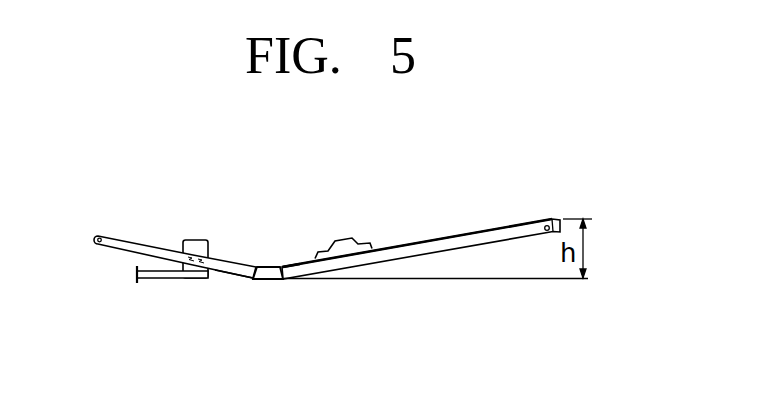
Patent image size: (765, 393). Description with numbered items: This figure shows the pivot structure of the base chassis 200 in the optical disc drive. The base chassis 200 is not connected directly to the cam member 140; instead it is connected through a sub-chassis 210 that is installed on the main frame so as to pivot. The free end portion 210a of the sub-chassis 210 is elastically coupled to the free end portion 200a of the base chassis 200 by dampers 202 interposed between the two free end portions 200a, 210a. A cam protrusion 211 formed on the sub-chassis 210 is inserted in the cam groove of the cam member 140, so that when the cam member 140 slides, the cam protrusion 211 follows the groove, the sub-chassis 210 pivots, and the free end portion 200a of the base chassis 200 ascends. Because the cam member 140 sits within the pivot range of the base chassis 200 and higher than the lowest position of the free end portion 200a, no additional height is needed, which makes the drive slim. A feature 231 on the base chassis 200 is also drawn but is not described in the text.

The cam member 140 is at (172, 280).
The base chassis 200 is at (459, 236).
The free end portion of the base chassis 200a is at (290, 264).
The damper 202 is at (268, 281).
The sub-chassis 210 is at (143, 240).
The free end portion of the sub-chassis 210a is at (232, 280).
The cam protrusion 211 is at (203, 239).
The protrusion 231 is at (342, 238).